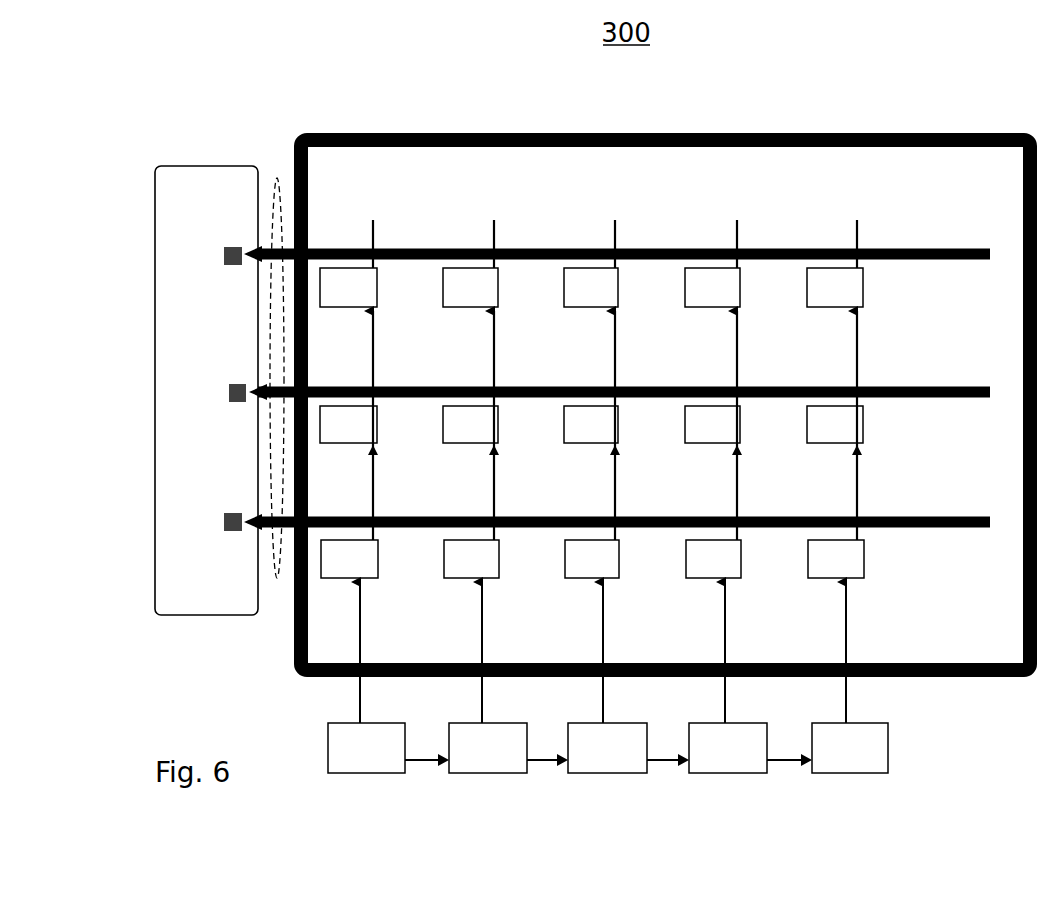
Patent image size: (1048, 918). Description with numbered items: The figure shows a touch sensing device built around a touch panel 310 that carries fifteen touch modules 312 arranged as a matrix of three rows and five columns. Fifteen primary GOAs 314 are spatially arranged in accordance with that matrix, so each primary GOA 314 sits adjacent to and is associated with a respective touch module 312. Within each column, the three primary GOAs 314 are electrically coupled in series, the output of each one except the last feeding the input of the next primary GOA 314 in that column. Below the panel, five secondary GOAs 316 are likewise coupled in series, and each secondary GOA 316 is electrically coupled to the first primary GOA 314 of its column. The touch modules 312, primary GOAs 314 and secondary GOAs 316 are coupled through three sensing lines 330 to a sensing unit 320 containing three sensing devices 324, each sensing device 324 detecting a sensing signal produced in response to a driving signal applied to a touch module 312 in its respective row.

The touch panel 310 is at (898, 190).
The touch module 312 is at (505, 248).
The primary GOA 314 is at (475, 277).
The secondary GOA 316 is at (485, 775).
The sensing unit 320 is at (155, 205).
The sensing device 324 is at (228, 248).
The sensing line 330 is at (264, 354).